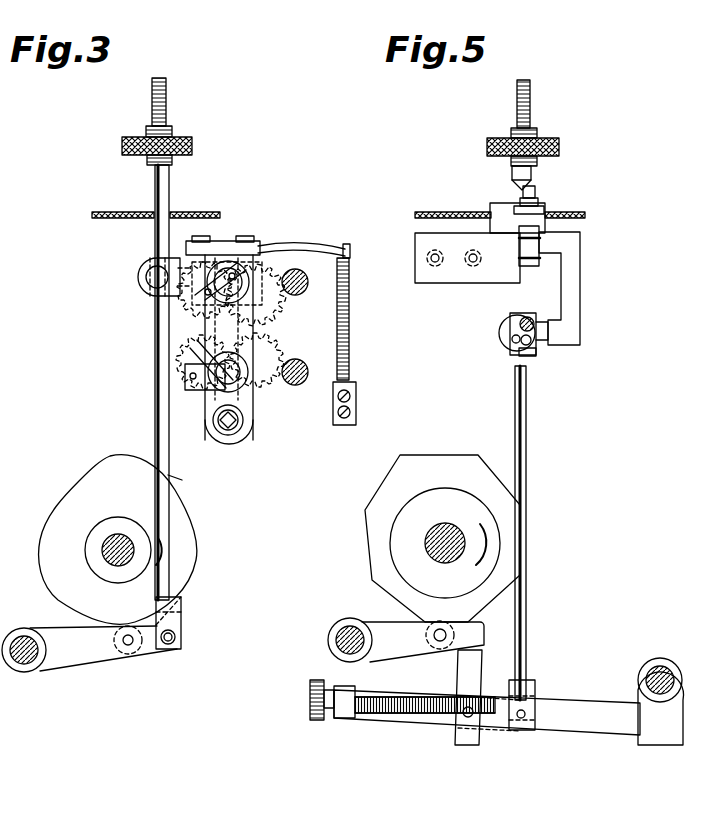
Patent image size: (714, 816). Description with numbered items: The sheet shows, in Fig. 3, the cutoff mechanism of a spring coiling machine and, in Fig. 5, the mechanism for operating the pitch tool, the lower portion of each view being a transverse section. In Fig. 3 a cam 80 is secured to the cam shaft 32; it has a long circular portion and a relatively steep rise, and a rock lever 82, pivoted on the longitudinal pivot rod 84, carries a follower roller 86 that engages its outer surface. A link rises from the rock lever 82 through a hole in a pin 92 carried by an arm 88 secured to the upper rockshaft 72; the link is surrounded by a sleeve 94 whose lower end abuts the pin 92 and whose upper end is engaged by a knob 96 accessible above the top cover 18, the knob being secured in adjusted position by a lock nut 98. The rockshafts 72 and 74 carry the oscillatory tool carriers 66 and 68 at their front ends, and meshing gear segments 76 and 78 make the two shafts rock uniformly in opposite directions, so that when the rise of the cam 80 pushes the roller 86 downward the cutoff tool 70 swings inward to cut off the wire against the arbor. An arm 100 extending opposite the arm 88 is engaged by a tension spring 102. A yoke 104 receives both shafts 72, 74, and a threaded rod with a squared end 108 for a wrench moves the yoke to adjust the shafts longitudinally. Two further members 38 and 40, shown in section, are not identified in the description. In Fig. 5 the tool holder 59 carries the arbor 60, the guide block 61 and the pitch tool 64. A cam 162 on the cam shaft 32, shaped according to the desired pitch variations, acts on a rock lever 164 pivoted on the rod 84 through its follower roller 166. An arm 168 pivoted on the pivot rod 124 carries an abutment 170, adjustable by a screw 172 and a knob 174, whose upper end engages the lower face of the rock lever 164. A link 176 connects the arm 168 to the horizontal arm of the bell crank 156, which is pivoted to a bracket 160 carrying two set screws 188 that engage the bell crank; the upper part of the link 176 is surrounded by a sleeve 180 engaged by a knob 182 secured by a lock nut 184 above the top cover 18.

In FIG. 3, the top cover 18 is at (207, 214).
In FIG. 5, the top cover 18 is at (570, 212).
In FIG. 3, the cam shaft 32 is at (122, 536).
In FIG. 5, the cam shaft 32 is at (456, 530).
In FIG. 3, the shaft 38 is at (304, 292).
In FIG. 3, the shaft 40 is at (310, 356).
In FIG. 5, the tool holder 59 is at (506, 320).
In FIG. 5, the arbor 60 is at (512, 340).
In FIG. 5, the guide block 61 is at (524, 315).
In FIG. 5, the pitch tool 64 is at (536, 354).
In FIG. 3, the upper tool carrier 66 is at (196, 272).
In FIG. 3, the lower tool carrier 68 is at (200, 390).
In FIG. 3, the cutoff tool 70 is at (190, 340).
In FIG. 3, the upper rockshaft 72 is at (250, 262).
In FIG. 3, the lower rockshaft 74 is at (232, 366).
In FIG. 3, the gear segment 76 is at (276, 312).
In FIG. 3, the gear segment 78 is at (262, 368).
In FIG. 3, the cam 80 is at (45, 532).
In FIG. 3, the rock lever 82 is at (78, 670).
In FIG. 3, the longitudinal pivot rod 84 is at (24, 628).
In FIG. 5, the longitudinal pivot rod 84 is at (338, 632).
In FIG. 3, the follower roller 86 is at (136, 651).
In FIG. 3, the arm 88 is at (150, 297).
In FIG. 3, the pin 92 is at (145, 263).
In FIG. 3, the sleeve 94 is at (169, 182).
In FIG. 3, the knob 96 is at (192, 146).
In FIG. 3, the lock nut 98 is at (166, 116).
In FIG. 3, the arm 100 is at (305, 243).
In FIG. 3, the tension spring 102 is at (349, 322).
In FIG. 3, the yoke 104 is at (252, 400).
In FIG. 3, the squared end 108 is at (240, 424).
In FIG. 5, the longitudinal pivot rod 124 is at (660, 658).
In FIG. 5, the bell crank 156 is at (572, 282).
In FIG. 5, the bracket 160 is at (497, 222).
In FIG. 5, the cam 162 is at (470, 478).
In FIG. 5, the rock lever 164 is at (392, 628).
In FIG. 5, the follower roller 166 is at (432, 652).
In FIG. 5, the arm 168 is at (420, 728).
In FIG. 5, the abutment 170 is at (456, 683).
In FIG. 5, the screw 172 is at (360, 718).
In FIG. 5, the knob 174 is at (310, 702).
In FIG. 5, the link 176 is at (526, 490).
In FIG. 5, the sleeve 180 is at (512, 175).
In FIG. 5, the knob 182 is at (559, 148).
In FIG. 5, the lock nut 184 is at (531, 120).
In FIG. 5, the set screws 188 is at (535, 190).